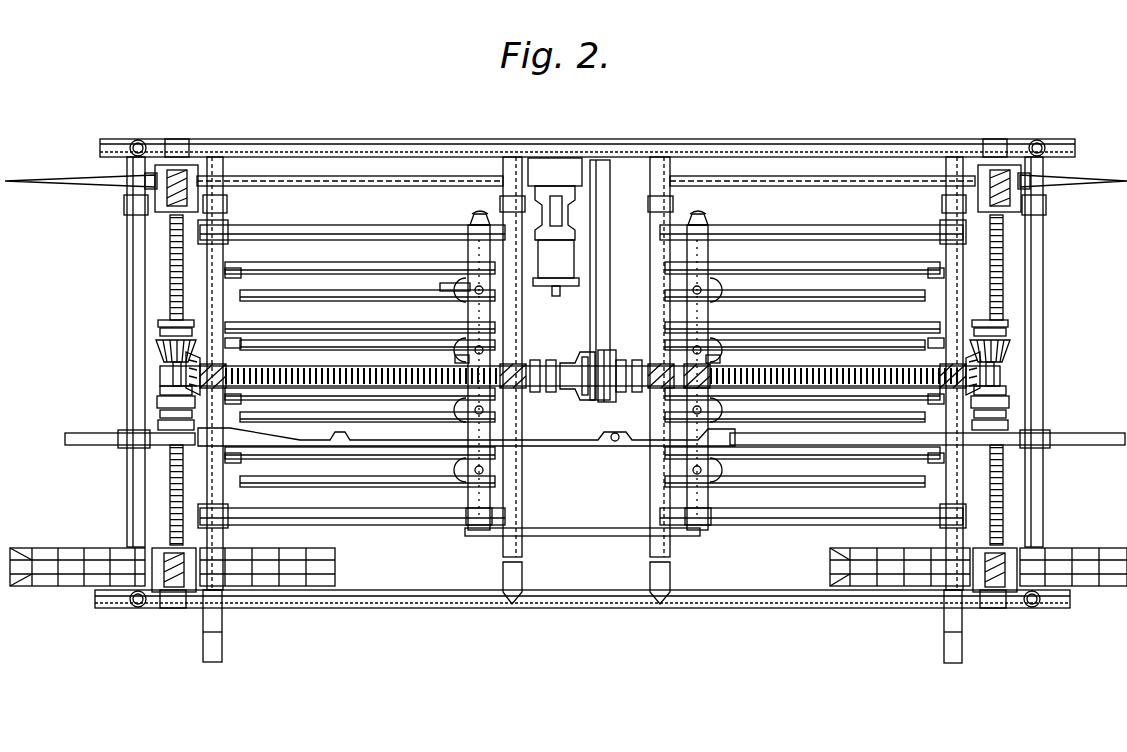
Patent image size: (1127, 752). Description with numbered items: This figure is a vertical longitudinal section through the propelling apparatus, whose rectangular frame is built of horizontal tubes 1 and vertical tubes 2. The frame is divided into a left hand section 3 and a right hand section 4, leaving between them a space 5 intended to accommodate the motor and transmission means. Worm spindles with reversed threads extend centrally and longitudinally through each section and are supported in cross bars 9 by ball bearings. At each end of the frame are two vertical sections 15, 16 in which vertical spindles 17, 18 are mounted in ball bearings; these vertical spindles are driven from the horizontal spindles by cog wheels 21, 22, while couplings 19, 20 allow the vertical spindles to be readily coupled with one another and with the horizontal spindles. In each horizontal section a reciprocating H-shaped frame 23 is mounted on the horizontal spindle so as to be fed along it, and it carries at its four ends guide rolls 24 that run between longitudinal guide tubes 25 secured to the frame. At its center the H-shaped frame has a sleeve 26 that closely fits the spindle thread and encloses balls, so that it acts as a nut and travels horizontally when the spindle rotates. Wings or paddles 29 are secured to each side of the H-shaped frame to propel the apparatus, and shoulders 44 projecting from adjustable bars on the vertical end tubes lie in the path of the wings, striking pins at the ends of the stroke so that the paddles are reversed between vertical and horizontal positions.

The horizontal tubes 1 is at (318, 143).
The vertical tubes 2 is at (130, 232).
The left hand section 3 is at (566, 198).
The right hand section 4 is at (789, 208).
The space 5 is at (578, 279).
The cross bars 9 is at (235, 366).
The vertical section 15 is at (140, 215).
The vertical section 16 is at (150, 465).
The vertical spindle 17 is at (168, 278).
The vertical spindle 18 is at (170, 490).
The coupling 19 is at (568, 567).
The coupling 20 is at (175, 420).
The cog wheel 21 is at (158, 358).
The cog wheel 22 is at (185, 380).
The reciprocating H-shaped frame 23 is at (468, 310).
The guide rolls 24 is at (474, 222).
The longitudinal guide tubes 25 is at (282, 233).
The sleeve 26 is at (455, 360).
The wings or paddles 29 is at (450, 287).
The shoulders 44 is at (236, 270).